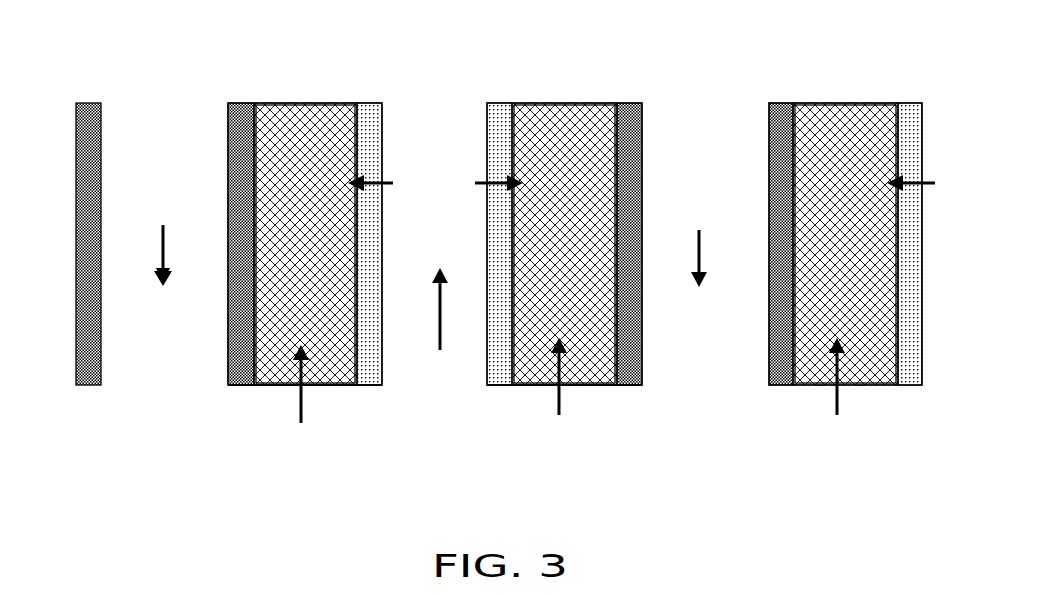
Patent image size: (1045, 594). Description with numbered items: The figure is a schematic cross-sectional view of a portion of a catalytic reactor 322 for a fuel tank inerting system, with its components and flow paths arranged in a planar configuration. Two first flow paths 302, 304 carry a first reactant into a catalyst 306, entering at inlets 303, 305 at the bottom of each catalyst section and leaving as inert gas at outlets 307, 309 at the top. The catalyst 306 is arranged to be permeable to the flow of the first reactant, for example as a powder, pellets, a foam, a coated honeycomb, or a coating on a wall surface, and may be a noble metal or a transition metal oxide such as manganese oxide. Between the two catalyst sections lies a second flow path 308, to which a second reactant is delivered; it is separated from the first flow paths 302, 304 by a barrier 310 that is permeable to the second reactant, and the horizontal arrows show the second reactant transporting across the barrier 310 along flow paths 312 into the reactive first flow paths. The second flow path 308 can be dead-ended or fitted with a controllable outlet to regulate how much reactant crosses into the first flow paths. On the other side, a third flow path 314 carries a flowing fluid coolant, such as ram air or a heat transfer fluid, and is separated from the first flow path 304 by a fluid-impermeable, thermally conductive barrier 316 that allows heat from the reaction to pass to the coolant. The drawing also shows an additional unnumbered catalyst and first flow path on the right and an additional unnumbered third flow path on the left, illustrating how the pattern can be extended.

The catalytic reactor 322 is at (118, 38).
The barrier 310 is at (242, 108).
The outlet 307 is at (272, 103).
The catalyst 306 is at (330, 113).
The outlet 309 is at (555, 103).
The fluid-impermeable barrier 316 is at (632, 103).
The flow paths 312 is at (478, 178).
The first flow path 302 is at (299, 397).
The inlet 303 is at (336, 386).
The first flow path 304 is at (557, 394).
The inlet 305 is at (594, 386).
The second flow path 308 is at (438, 316).
The third flow path 314 is at (697, 258).